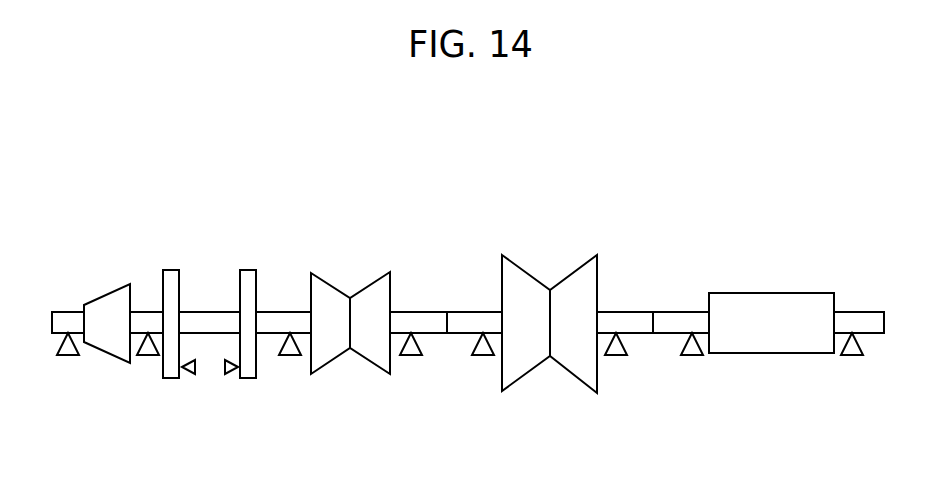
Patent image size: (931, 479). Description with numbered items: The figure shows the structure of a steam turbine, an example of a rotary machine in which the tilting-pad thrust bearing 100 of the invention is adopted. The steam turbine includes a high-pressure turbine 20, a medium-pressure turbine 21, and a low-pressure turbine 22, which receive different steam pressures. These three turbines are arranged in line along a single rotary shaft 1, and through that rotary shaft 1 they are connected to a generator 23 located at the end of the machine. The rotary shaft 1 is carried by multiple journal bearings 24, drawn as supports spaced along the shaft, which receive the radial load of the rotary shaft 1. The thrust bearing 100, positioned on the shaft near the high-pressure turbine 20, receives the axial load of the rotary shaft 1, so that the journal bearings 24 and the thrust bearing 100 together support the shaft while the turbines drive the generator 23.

The rotary shaft 1 is at (63, 310).
The high-pressure turbine 20 is at (102, 356).
The medium-pressure turbine 21 is at (344, 357).
The low-pressure turbine 22 is at (544, 365).
The generator 23 is at (776, 357).
The journal bearing 24 is at (70, 359).
The tilting-pad thrust bearing 100 is at (180, 384).